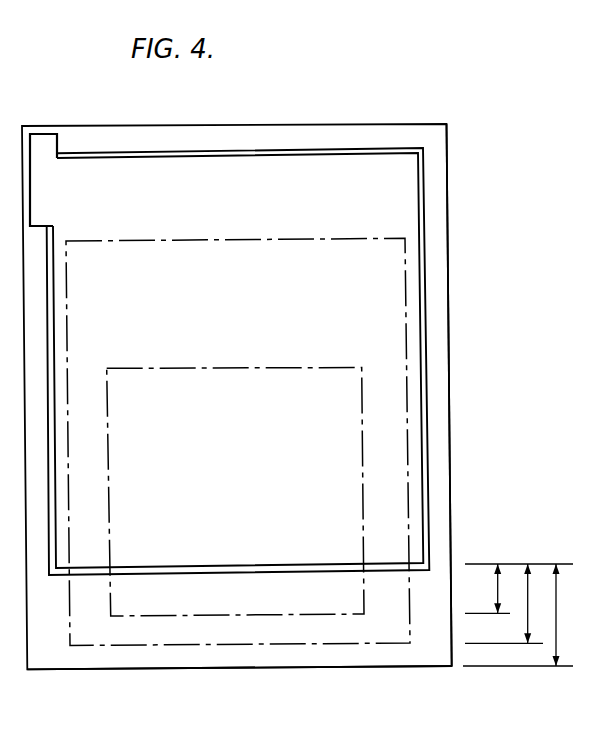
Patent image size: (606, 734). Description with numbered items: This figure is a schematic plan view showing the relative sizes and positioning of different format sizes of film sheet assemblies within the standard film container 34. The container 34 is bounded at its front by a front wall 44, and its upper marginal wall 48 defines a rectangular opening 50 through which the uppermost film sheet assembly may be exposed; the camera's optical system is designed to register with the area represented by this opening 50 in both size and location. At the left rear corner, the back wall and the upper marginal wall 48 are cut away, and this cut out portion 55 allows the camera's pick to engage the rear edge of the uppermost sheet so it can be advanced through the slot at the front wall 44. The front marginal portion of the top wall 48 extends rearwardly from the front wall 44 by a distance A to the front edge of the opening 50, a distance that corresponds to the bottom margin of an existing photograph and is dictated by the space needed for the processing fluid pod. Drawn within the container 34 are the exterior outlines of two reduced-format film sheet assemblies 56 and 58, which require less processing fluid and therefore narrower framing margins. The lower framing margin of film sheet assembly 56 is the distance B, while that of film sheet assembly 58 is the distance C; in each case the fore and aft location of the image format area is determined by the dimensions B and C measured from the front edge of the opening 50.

The container 34 is at (455, 347).
The front wall 44 is at (340, 669).
The upper marginal wall 48 is at (442, 492).
The rectangular opening 50 is at (415, 213).
The cut out portion 55 is at (44, 148).
The film sheet assembly 56 is at (220, 366).
The film sheet assembly 58 is at (270, 238).
The distance A is at (557, 622).
The distance B is at (497, 593).
The distance C is at (528, 610).